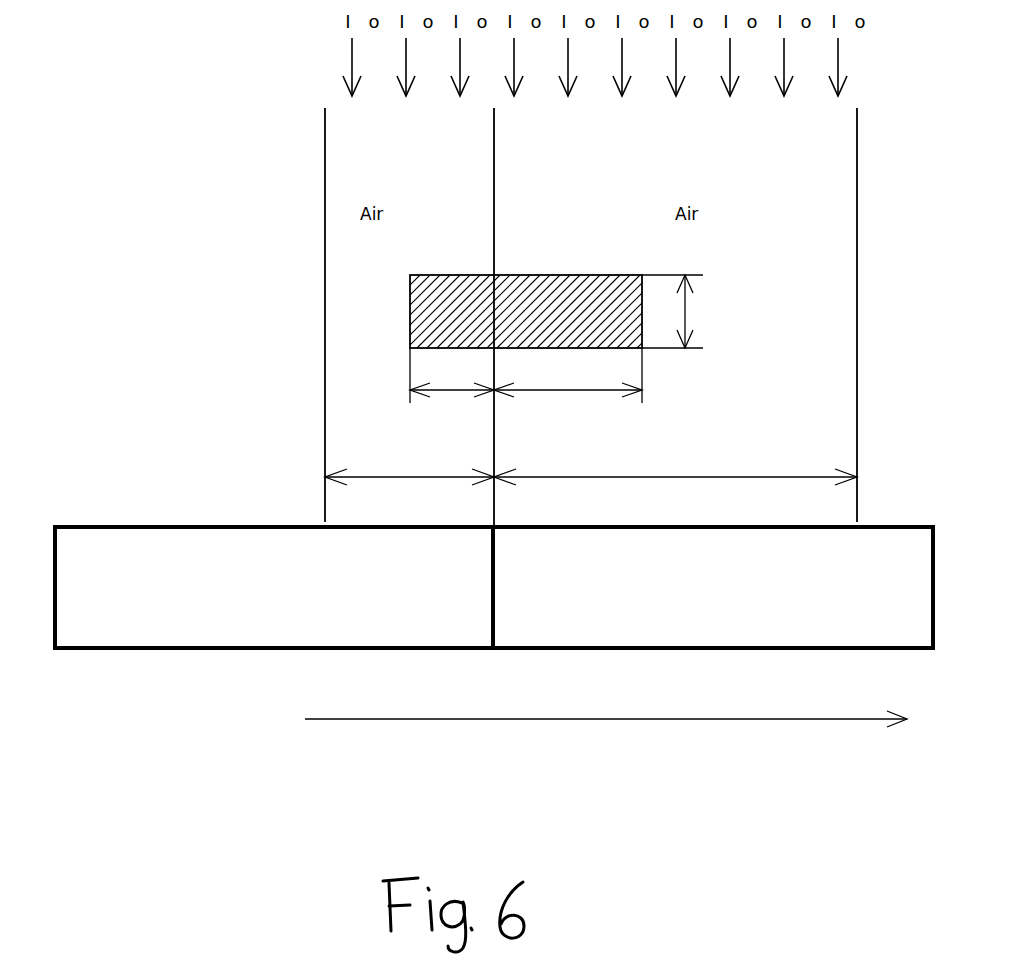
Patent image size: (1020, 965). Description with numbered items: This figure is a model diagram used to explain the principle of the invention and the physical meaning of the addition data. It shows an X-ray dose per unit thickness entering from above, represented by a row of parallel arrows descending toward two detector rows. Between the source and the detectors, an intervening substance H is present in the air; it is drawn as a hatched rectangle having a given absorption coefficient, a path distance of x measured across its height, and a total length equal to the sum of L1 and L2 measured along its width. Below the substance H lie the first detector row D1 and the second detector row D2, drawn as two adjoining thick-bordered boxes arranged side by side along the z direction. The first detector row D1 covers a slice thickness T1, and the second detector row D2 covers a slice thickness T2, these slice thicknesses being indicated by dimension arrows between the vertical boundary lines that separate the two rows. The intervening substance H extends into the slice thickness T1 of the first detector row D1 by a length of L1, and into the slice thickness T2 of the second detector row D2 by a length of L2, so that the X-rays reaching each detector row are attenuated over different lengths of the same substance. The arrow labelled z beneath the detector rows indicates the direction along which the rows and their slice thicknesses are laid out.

The intervening substance H is at (412, 312).
The path distance x is at (676, 311).
The length in first slice L1 is at (452, 401).
The length in second slice L2 is at (568, 401).
The slice thickness of first detector row T1 is at (409, 490).
The slice thickness of second detector row T2 is at (675, 490).
The first detector row D1 is at (274, 587).
The second detector row D2 is at (713, 587).
The z direction z is at (609, 707).